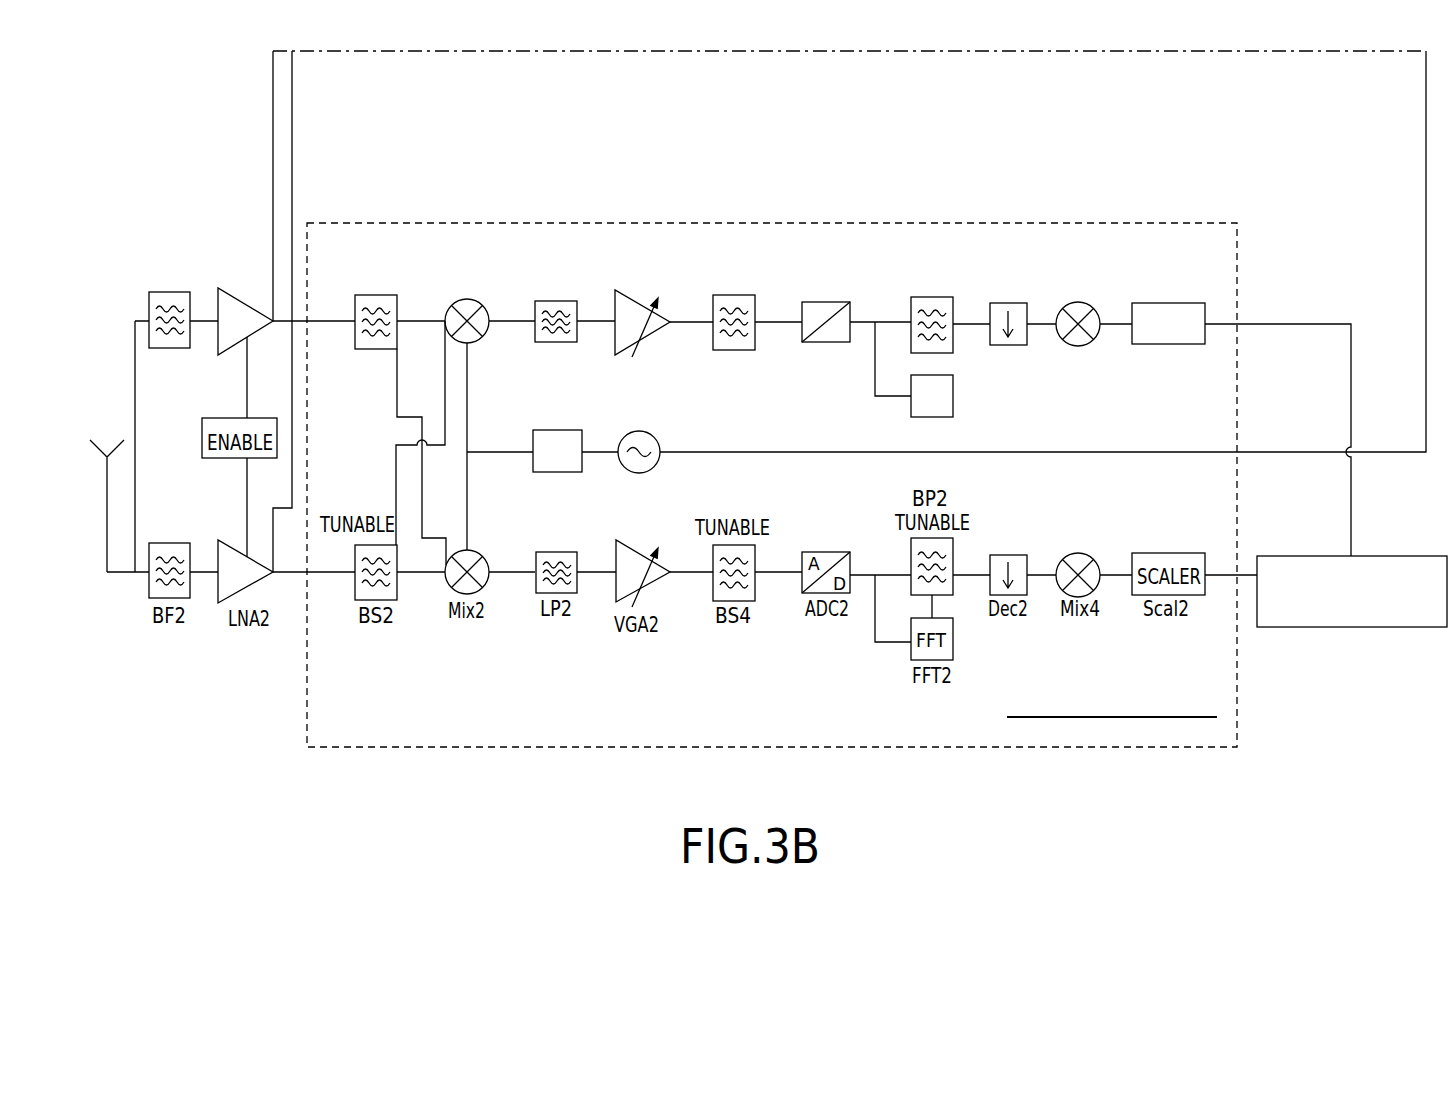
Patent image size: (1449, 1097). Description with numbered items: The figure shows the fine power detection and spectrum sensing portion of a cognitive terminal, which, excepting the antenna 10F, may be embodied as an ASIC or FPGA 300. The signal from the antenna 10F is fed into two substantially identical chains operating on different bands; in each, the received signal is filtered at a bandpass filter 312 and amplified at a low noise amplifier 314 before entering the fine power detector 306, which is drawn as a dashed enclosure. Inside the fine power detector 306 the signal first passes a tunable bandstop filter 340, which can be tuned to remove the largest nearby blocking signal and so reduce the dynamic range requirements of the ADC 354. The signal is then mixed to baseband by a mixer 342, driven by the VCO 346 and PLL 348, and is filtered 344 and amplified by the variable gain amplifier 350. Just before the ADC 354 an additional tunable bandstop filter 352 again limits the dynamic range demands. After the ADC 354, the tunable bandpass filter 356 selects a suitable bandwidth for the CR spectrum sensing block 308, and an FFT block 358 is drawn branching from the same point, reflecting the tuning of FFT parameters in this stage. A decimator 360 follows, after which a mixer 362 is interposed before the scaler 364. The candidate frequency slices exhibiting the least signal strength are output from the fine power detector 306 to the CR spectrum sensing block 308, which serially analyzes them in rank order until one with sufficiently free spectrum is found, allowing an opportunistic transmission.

The ASIC or FPGA 300 is at (236, 758).
The fine power detector 306 is at (1000, 748).
The CR spectrum sensing block 308 is at (1326, 556).
The antenna 10F is at (98, 447).
The bandpass filter 312 is at (162, 290).
The low noise amplifier 314 is at (236, 347).
The tunable bandstop filter 340 is at (399, 312).
The mixer 342 is at (481, 300).
The filter 344 is at (553, 300).
The VCO 346 is at (641, 473).
The PLL 348 is at (535, 442).
The variable gain amplifier 350 is at (627, 292).
The tunable bandstop filter 352 is at (756, 351).
The ADC 354 is at (827, 300).
The tunable bandpass filter 356 is at (953, 293).
The FFT block FFT1 358 is at (953, 395).
The decimator 360 is at (1010, 303).
The mixer 362 is at (1083, 303).
The scaler 364 is at (1163, 303).